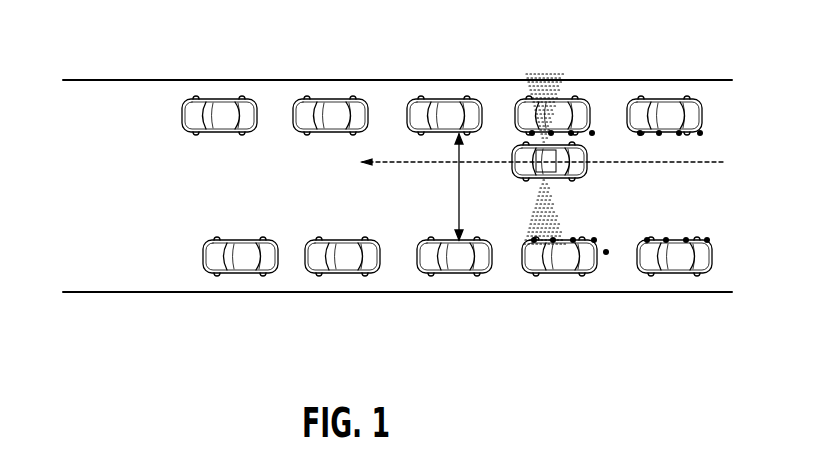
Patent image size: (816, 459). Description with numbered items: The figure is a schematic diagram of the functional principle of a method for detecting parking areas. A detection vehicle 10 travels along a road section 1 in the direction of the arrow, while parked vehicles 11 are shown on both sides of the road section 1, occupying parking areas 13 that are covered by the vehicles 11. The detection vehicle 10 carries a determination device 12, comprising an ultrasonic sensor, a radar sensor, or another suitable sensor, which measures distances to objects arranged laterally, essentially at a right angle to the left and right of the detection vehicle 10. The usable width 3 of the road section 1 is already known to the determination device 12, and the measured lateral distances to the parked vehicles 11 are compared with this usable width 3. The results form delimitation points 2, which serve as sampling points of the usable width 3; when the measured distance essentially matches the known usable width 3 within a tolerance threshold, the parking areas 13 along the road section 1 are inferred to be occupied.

The road section 1 is at (103, 80).
The delimitation points 2 is at (640, 136).
The usable width 3 is at (458, 190).
The detection vehicle 10 is at (527, 176).
The parked vehicles 11 is at (222, 99).
The determination device 12 is at (562, 178).
The parking areas 13 is at (661, 99).